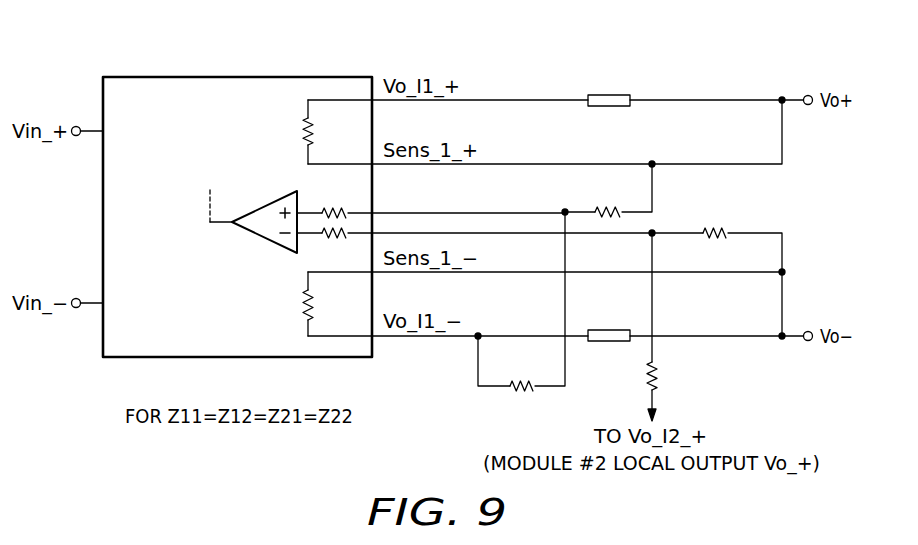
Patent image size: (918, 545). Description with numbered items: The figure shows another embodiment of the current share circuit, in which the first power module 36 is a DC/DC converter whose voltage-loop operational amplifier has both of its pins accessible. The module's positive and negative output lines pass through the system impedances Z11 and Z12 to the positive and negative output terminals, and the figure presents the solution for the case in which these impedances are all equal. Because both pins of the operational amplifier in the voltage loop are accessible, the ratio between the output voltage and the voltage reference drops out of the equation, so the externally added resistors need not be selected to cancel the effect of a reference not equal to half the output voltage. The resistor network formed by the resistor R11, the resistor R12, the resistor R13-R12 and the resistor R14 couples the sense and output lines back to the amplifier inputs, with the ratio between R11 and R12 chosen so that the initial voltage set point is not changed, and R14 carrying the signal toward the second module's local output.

The first power module 36 is at (236, 77).
The system impedance Z11 is at (609, 88).
The system impedance Z12 is at (609, 325).
The resistor R11 is at (610, 201).
The resistor R12 is at (522, 375).
The resistor R13-R12 is at (715, 222).
The resistor R14 is at (694, 376).